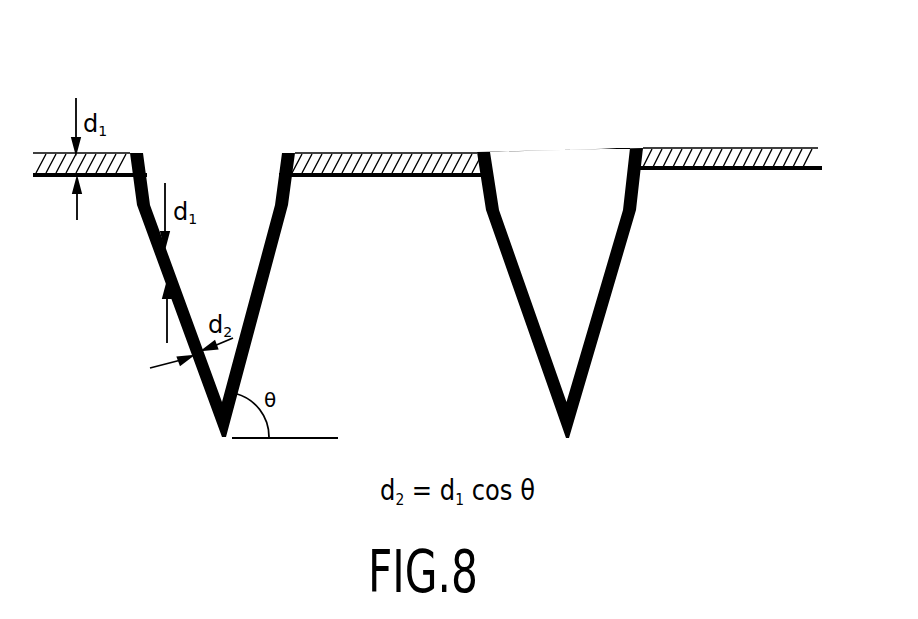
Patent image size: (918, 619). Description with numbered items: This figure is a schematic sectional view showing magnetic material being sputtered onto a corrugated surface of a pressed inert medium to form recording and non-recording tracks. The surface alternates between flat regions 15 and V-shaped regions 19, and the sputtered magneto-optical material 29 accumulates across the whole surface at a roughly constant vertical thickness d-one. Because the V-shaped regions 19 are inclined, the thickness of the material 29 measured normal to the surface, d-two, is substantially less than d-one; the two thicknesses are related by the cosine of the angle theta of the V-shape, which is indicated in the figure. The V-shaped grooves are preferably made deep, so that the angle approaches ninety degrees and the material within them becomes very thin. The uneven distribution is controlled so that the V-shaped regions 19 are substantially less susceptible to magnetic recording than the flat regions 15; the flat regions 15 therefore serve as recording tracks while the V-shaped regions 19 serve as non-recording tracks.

The flat regions 15 is at (818, 146).
The V-shaped regions 19 is at (135, 66).
The magneto-optical material 29 is at (810, 157).